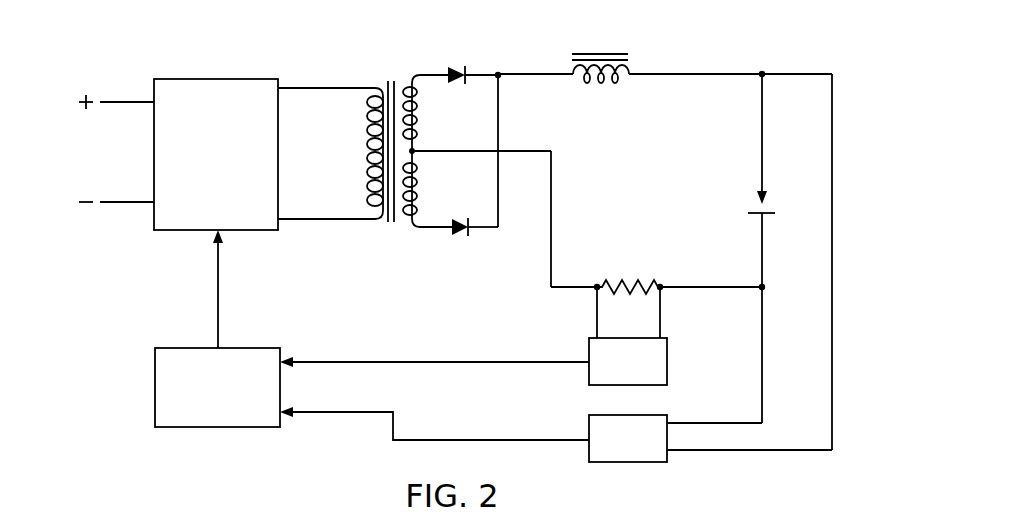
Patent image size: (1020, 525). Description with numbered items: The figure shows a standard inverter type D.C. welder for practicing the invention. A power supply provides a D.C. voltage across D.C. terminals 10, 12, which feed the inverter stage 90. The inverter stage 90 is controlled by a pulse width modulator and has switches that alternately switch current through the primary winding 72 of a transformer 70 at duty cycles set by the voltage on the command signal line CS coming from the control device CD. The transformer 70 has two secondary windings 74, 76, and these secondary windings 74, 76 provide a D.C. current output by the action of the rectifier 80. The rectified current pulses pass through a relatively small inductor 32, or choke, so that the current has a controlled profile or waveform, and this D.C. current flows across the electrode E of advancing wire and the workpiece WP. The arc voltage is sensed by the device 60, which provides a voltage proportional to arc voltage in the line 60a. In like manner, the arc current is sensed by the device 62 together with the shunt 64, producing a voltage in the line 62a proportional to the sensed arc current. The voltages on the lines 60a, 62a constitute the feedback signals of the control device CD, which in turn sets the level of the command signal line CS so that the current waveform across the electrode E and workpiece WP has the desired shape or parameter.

The D.C. terminal 10 is at (112, 100).
The D.C. terminal 12 is at (112, 200).
The inverter stage 90 is at (193, 78).
The transformer 70 is at (381, 64).
The primary winding 72 is at (369, 147).
The secondary winding 74 is at (416, 108).
The secondary winding 76 is at (414, 197).
The rectifier 80 is at (458, 66).
The inductor 32 is at (632, 63).
The electrode E is at (768, 198).
The workpiece WP is at (752, 216).
The shunt 64 is at (625, 280).
The arc current sensing device 62 is at (668, 357).
The arc current signal line 62a is at (392, 361).
The arc voltage sensing device 60 is at (641, 462).
The arc voltage signal line 60a is at (353, 413).
The command signal line CS is at (220, 288).
The control device CD is at (200, 428).